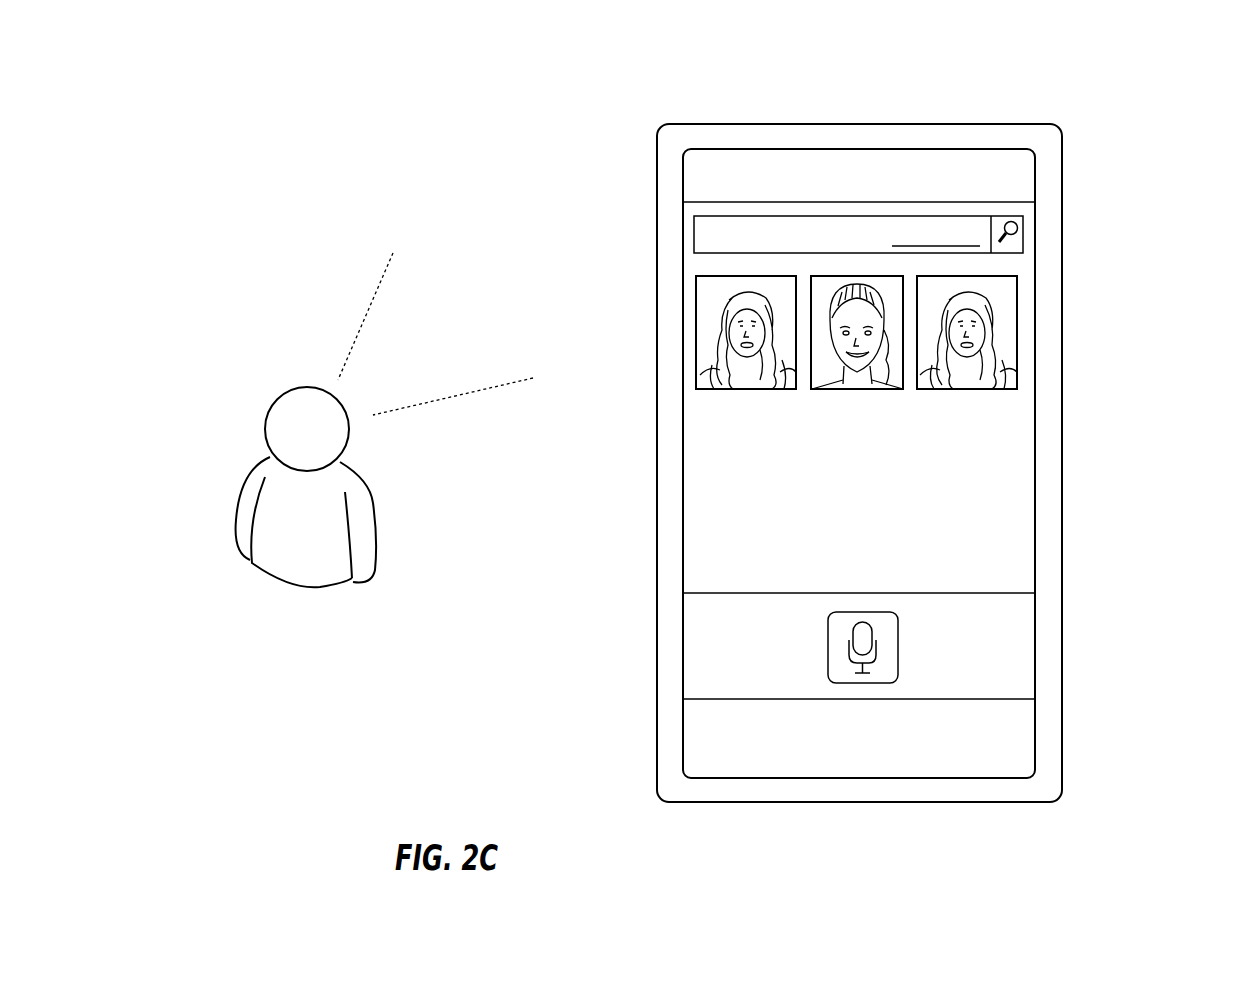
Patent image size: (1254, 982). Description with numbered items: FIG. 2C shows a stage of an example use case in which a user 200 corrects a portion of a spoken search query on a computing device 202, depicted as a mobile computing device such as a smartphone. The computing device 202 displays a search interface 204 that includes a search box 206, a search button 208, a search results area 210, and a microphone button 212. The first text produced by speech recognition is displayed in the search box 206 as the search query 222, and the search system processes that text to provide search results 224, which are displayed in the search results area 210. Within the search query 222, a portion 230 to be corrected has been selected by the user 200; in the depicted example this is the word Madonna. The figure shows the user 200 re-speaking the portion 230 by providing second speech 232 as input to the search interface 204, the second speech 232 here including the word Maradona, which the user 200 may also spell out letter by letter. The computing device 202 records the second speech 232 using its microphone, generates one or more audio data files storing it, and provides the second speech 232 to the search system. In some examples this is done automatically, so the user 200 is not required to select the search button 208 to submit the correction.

The user 200 is at (278, 400).
The computing device 202 is at (1062, 750).
The search interface 204 is at (1172, 200).
The search box 206 is at (720, 216).
The search button 208 is at (1005, 216).
The search results area 210 is at (1017, 582).
The microphone button 212 is at (900, 646).
The search query 222 is at (832, 223).
The search results 224 is at (1068, 266).
The portion of the search query 230 is at (937, 222).
The second speech 232 is at (562, 250).